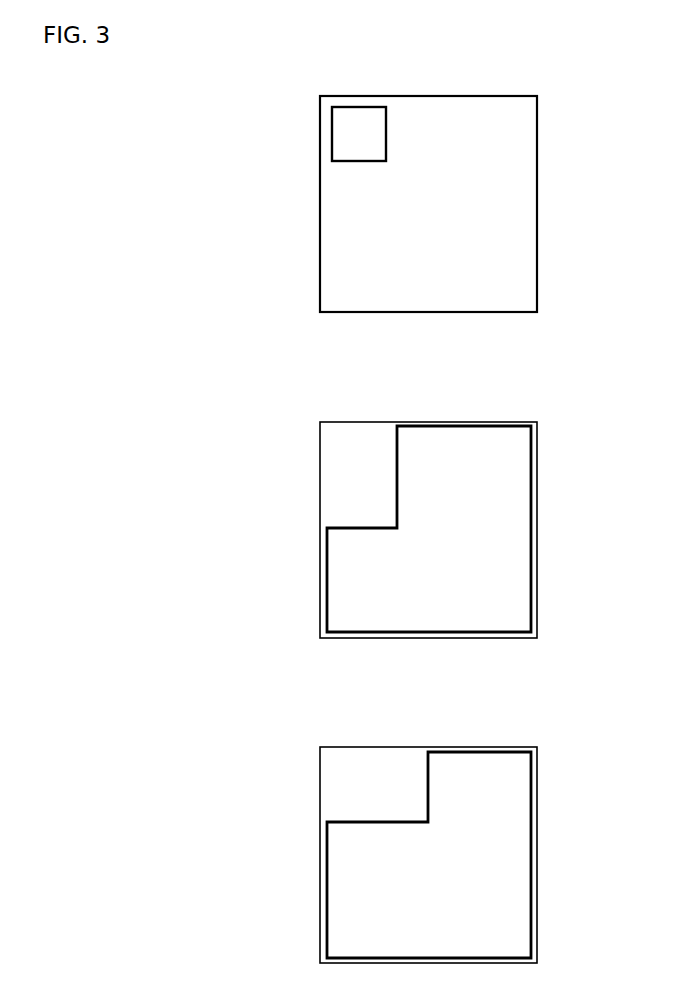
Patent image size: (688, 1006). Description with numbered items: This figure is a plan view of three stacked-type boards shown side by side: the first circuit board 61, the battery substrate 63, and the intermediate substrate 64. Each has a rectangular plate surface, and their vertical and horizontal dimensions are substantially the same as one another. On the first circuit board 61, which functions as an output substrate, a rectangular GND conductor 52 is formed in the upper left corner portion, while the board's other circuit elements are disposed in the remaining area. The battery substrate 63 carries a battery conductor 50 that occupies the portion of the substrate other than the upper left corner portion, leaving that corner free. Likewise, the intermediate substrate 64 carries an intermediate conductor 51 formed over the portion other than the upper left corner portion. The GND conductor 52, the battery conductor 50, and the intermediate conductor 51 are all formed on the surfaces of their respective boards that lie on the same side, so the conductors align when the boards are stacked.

The battery conductor 50 is at (337, 580).
The intermediate conductor 51 is at (337, 892).
The GND conductor 52 is at (342, 133).
The first circuit board 61 is at (537, 131).
The battery substrate 63 is at (537, 460).
The intermediate substrate 64 is at (537, 784).